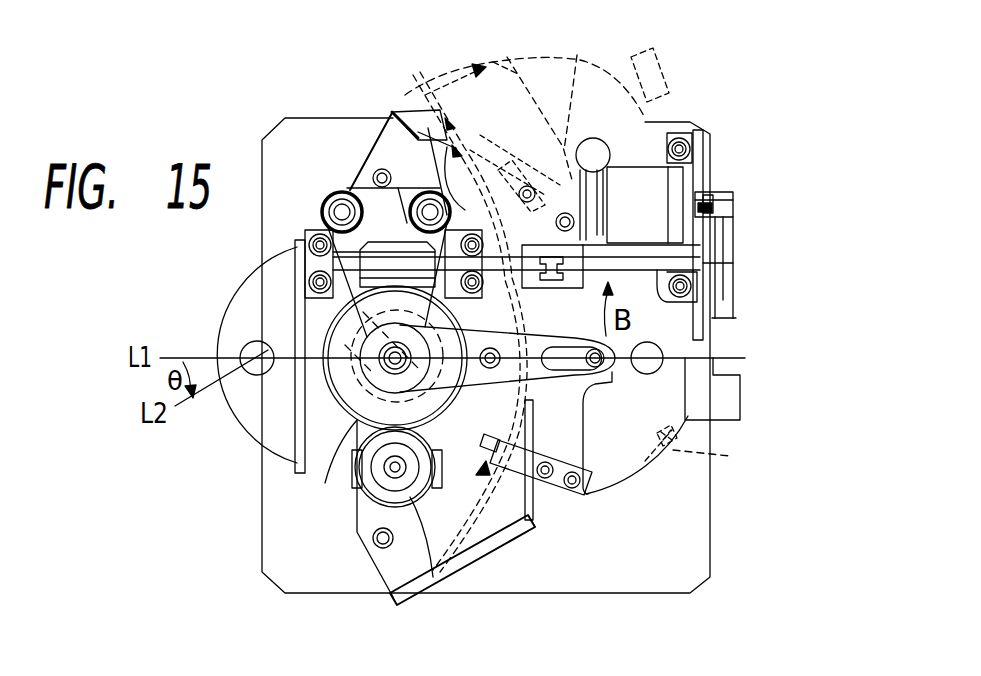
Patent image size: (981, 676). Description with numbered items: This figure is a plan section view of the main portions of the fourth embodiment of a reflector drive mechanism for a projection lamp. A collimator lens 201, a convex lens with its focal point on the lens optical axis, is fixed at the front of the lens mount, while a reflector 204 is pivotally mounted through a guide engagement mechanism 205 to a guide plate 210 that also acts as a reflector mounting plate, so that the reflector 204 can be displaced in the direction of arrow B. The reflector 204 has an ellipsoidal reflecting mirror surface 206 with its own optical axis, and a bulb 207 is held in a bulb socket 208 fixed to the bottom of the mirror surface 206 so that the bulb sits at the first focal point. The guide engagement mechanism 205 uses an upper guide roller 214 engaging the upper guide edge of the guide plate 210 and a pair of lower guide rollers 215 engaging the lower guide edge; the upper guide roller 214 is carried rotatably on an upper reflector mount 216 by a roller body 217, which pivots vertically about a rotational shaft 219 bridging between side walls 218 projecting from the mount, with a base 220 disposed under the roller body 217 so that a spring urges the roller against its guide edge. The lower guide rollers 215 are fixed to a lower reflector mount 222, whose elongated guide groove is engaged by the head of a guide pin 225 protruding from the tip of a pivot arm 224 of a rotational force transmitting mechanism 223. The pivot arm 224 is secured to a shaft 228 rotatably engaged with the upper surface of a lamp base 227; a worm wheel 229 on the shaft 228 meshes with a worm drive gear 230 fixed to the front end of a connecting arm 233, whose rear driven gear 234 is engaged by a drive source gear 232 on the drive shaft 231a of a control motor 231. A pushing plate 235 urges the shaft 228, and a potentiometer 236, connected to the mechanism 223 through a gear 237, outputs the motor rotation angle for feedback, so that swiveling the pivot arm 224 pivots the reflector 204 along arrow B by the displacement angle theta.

The collimator lens 201 is at (250, 300).
The reflector 204 is at (601, 75).
The guide engagement mechanism 205 is at (447, 147).
The ellipsoidal reflecting mirror surface 206 is at (711, 451).
The bulb 207 is at (647, 375).
The bulb socket 208 is at (693, 413).
The guide plate 210 is at (400, 110).
The upper guide roller 214 is at (484, 162).
The lower guide rollers 215 is at (535, 512).
The upper reflector mount 216 is at (499, 60).
The roller body 217 is at (579, 88).
The side walls 218 is at (606, 225).
The rotational shaft 219 is at (517, 175).
The base 220 is at (608, 185).
The lower reflector mount 222 is at (577, 398).
The rotational force transmitting mechanism 223 is at (762, 146).
The pivot arm 224 is at (543, 367).
The guide pin 225 is at (612, 352).
The lamp base 227 is at (685, 533).
The shaft 228 is at (382, 476).
The worm wheel 229 is at (340, 390).
The worm drive gear 230 is at (330, 200).
The control motor 231 is at (665, 178).
The drive shaft 231a is at (710, 192).
The drive source gear 232 is at (733, 200).
The connecting arm 233 is at (660, 320).
The driven gear 234 is at (733, 247).
The pushing plate 235 is at (340, 190).
The potentiometer 236 is at (356, 492).
The gear 237 is at (428, 590).